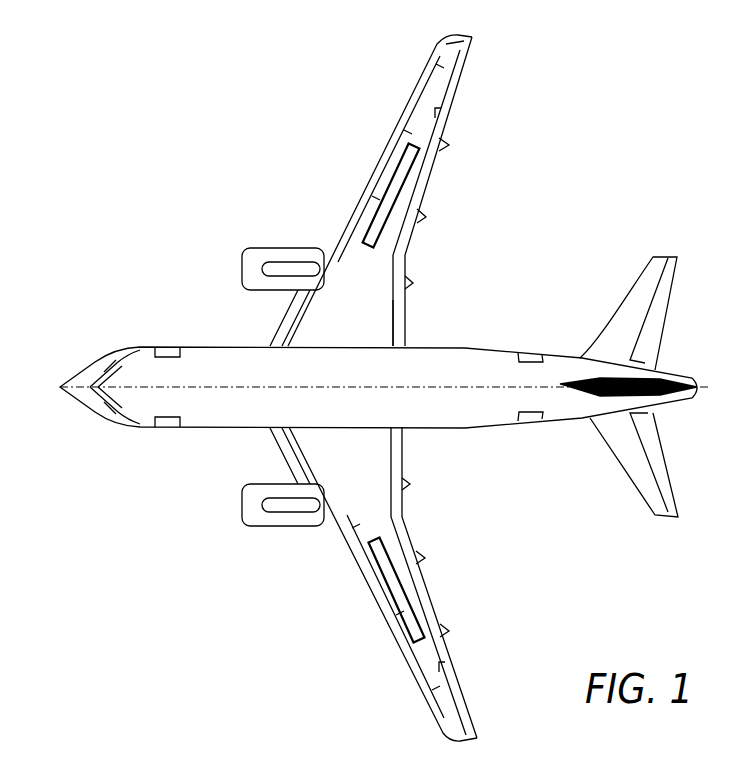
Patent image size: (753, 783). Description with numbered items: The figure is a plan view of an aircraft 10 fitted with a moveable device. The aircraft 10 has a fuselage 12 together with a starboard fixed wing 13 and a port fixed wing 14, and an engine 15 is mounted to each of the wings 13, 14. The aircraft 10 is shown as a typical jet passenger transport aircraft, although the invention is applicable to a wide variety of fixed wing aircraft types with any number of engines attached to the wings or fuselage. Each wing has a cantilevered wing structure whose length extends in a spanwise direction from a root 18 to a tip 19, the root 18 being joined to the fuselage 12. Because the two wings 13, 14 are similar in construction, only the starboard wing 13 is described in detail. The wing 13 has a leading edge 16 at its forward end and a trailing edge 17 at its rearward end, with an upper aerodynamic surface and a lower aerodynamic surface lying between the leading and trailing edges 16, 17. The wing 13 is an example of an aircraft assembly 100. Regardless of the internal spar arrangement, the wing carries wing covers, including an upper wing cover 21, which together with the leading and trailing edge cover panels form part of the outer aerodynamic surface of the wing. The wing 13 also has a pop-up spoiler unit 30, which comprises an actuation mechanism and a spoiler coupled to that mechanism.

The aircraft 10 is at (122, 258).
The fuselage 12 is at (458, 357).
The starboard fixed wing 13 is at (369, 176).
The aircraft assembly 100 is at (352, 277).
The port fixed wing 14 is at (352, 513).
The engine 15 is at (250, 250).
The leading edge 16 is at (388, 127).
The trailing edge 17 is at (430, 179).
The root 18 is at (323, 340).
The tip 19 is at (458, 43).
The upper wing cover 21 is at (377, 308).
The pop-up spoiler unit 30 is at (387, 190).